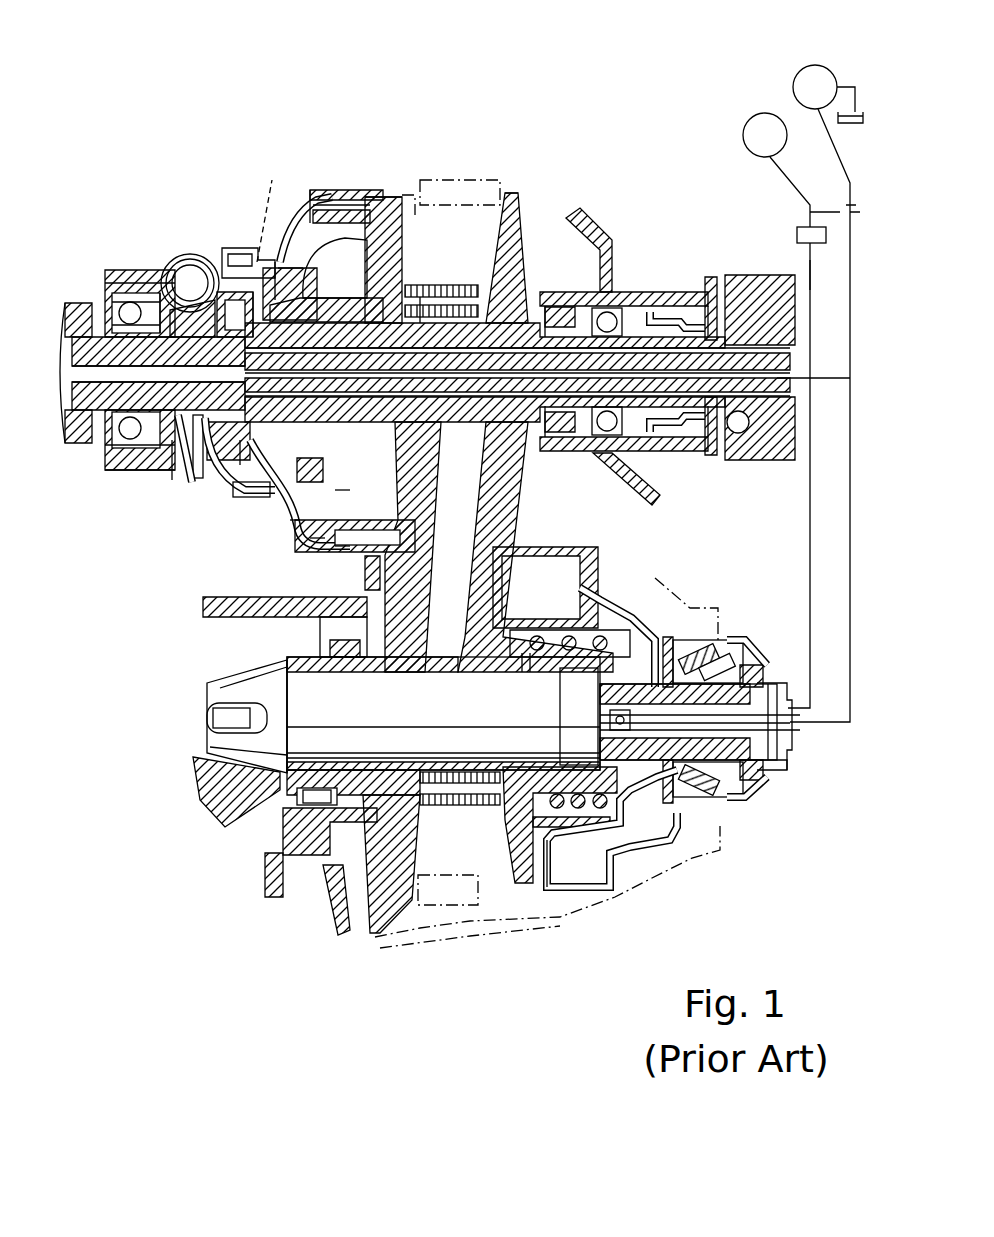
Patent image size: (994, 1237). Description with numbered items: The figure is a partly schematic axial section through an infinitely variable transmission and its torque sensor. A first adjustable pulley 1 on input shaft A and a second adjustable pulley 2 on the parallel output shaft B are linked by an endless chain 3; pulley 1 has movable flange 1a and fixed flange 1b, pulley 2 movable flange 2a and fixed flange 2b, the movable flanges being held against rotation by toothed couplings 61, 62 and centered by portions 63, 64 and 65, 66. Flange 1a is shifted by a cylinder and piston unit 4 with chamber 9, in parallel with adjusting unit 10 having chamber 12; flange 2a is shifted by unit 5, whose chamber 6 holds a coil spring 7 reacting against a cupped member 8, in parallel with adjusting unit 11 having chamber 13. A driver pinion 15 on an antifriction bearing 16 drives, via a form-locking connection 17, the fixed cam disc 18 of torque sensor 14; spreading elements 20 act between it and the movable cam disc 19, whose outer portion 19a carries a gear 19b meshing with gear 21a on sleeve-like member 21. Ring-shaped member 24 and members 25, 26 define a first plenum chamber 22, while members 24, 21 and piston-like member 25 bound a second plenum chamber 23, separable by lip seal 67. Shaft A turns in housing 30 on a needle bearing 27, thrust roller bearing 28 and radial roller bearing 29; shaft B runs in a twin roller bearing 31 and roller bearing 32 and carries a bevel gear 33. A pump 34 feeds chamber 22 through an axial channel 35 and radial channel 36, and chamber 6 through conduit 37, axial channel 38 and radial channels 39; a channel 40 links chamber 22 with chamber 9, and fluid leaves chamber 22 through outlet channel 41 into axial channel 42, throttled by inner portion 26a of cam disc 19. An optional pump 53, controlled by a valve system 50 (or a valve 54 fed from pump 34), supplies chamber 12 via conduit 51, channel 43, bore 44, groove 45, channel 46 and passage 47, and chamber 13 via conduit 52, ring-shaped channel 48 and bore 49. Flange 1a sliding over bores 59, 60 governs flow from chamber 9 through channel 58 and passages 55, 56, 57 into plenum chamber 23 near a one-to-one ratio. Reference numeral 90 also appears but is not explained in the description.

The first rotary member 1 is at (458, 520).
The axially movable first flange 1a is at (398, 195).
The axially fixed second flange 1b is at (508, 193).
The second rotary member 2 is at (461, 908).
The axially movable flange 2a is at (520, 890).
The axially fixed flange 2b is at (372, 917).
The endless flexible element 3 is at (433, 800).
The cylinder and piston unit 4 is at (295, 520).
The cylinder and piston unit 5 is at (588, 616).
The chamber 6 is at (655, 627).
The coil spring 7 is at (622, 618).
The cupped member 8 is at (610, 837).
The cylinder chamber 9 is at (340, 546).
The adjusting unit 10 is at (185, 128).
The adjusting unit 11 is at (587, 556).
The cylinder chamber 12 is at (318, 538).
The cylinder chamber 13 is at (537, 591).
The torque sensor 14 is at (170, 486).
The driver pinion 15 is at (120, 270).
The antifriction bearing 16 is at (120, 300).
The form-locking connection 17 is at (140, 478).
The rotary cam disc 18 is at (180, 262).
The second cam disc 19 is at (210, 258).
The radially outer portion 19a is at (240, 242).
The gear 19b is at (250, 500).
The spherical spreading elements 20 is at (200, 278).
The member 21 is at (355, 207).
The complementary gear 21a is at (250, 246).
The plenum chamber 22 is at (230, 247).
The plenum chamber 23 is at (287, 232).
The ring-shaped member 24 is at (303, 222).
The member 25 is at (218, 248).
The member 26 is at (127, 280).
The radially inner portion 26a is at (155, 280).
The needle bearing 27 is at (70, 330).
The thrust roller bearing 28 is at (640, 293).
The radial roller bearing 29 is at (608, 312).
The housing 30 is at (584, 222).
The twin antifriction roller bearing 31 is at (714, 803).
The antifriction roller bearing 32 is at (317, 773).
The bevel gear 33 is at (213, 695).
The pump 34 is at (812, 66).
The axially extending channel 35 is at (668, 300).
The radially extending channel 36 is at (150, 465).
The conduit 37 is at (835, 721).
The axially extending channel 38 is at (788, 727).
The radially extending channels 39 is at (608, 722).
The channel 40 is at (265, 258).
The channel 41 is at (112, 452).
The axially extending channel 42 is at (75, 405).
The channel 43 is at (517, 390).
The bore 44 is at (225, 470).
The peripheral groove 45 is at (317, 513).
The channel 46 is at (297, 300).
The passage 47 is at (312, 250).
The ring-shaped channel 48 is at (776, 752).
The channel 49 is at (698, 640).
The system of valves 50 is at (798, 232).
The conduit 51 is at (810, 275).
The conduit 52 is at (810, 563).
The pump 53 is at (768, 113).
The valve 54 is at (843, 203).
The passage 55 is at (250, 498).
The passage 56 is at (197, 480).
The passage 57 is at (300, 330).
The channel 58 is at (560, 320).
The bore 59 is at (398, 253).
The bore 60 is at (533, 350).
The toothed coupling 61 is at (370, 513).
The toothed coupling 62 is at (495, 667).
The centering portion 63 is at (340, 490).
The centering portion 64 is at (430, 320).
The centering portion 65 is at (463, 678).
The centering portion 66 is at (567, 753).
The lip seal 67 is at (243, 463).
The ring 90 is at (165, 315).
The rotary input member A is at (112, 473).
The rotary output member B is at (308, 697).